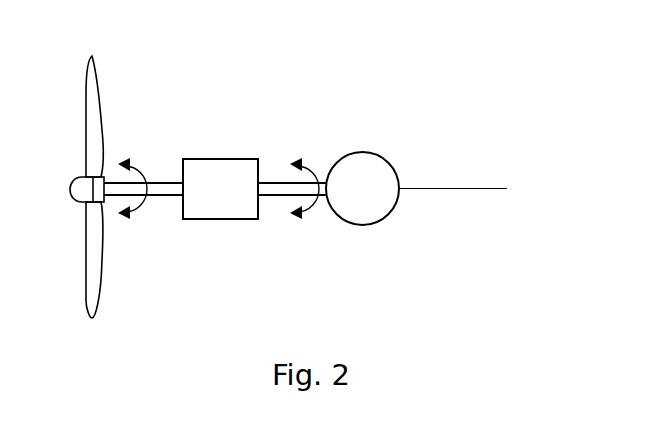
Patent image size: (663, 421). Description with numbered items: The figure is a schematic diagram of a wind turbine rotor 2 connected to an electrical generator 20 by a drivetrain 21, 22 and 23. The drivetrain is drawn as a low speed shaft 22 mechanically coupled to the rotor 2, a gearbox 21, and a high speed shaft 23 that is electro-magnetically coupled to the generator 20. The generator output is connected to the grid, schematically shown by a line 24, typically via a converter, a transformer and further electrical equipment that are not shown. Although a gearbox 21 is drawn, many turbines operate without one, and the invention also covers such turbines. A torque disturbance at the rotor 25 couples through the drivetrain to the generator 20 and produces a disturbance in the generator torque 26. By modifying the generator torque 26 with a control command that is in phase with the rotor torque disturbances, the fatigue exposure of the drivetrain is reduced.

The rotor 2 is at (105, 73).
The electrical generator 20 is at (380, 153).
The gearbox 21 is at (215, 157).
The low speed shaft 22 is at (162, 192).
The high speed shaft 23 is at (272, 190).
The line 24 is at (475, 188).
The torque disturbance at the rotor 25 is at (133, 165).
The generator torque 26 is at (317, 173).